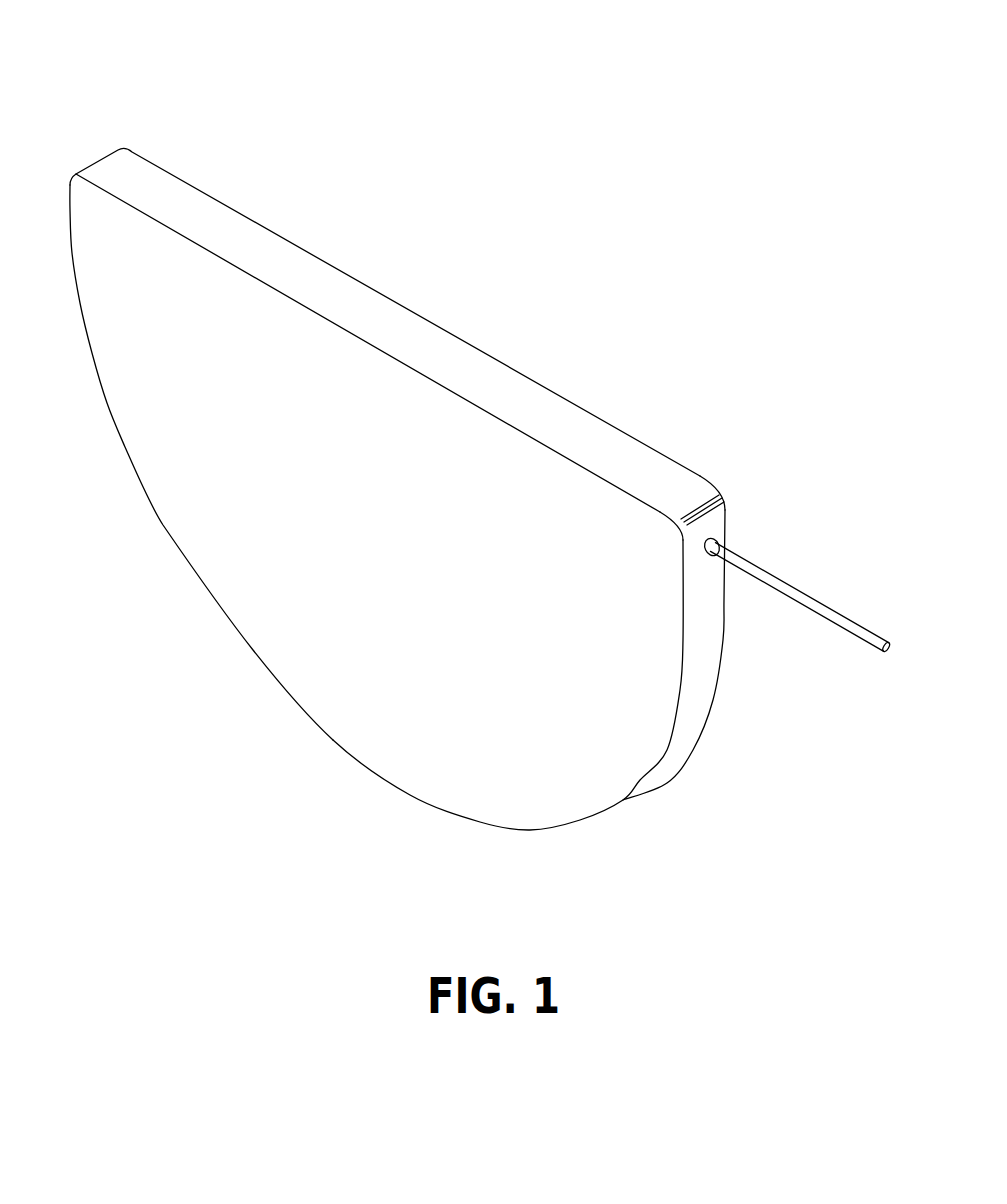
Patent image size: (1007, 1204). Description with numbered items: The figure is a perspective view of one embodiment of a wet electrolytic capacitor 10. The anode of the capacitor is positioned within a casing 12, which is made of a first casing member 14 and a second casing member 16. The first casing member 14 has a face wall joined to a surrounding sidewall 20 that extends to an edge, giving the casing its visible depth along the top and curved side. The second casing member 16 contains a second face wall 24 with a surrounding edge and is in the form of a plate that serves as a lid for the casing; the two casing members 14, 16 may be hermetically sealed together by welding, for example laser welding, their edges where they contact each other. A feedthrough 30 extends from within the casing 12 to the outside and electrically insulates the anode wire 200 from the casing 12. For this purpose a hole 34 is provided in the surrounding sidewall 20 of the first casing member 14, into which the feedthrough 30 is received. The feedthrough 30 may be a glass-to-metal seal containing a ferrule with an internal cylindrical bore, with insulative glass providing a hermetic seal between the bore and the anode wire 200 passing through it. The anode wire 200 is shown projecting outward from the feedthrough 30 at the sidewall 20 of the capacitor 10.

The capacitor 10 is at (447, 263).
The casing 12 is at (88, 152).
The first casing member 14 is at (550, 389).
The second casing member 16 is at (163, 525).
The surrounding sidewall 20 is at (584, 442).
The second face wall 24 is at (348, 712).
The feedthrough 30 is at (762, 537).
The hole 34 is at (710, 538).
The anode wire 200 is at (842, 615).